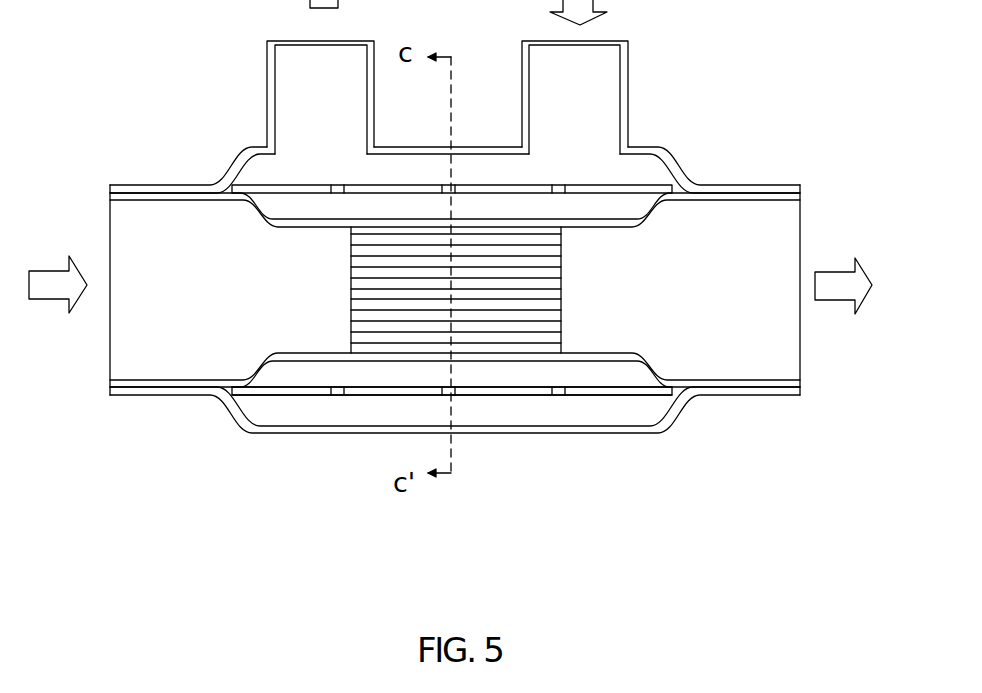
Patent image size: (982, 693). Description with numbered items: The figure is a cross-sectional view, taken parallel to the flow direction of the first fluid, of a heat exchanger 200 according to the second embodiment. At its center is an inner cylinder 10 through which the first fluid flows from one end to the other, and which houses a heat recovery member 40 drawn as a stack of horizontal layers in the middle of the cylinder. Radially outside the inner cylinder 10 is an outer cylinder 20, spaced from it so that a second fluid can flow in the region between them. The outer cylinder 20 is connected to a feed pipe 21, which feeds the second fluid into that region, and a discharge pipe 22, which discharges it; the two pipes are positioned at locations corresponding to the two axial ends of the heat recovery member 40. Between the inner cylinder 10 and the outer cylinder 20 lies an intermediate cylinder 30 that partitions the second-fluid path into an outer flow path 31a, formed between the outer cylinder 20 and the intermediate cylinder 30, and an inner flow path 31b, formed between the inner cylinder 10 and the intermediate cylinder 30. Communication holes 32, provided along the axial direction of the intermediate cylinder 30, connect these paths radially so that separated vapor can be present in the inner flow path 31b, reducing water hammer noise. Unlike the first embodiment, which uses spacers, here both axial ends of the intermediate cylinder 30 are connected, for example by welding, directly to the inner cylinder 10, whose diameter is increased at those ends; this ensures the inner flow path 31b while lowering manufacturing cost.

The heat exchanger 200 is at (497, 597).
The inner cylinder 10 is at (645, 370).
The outer cylinder 20 is at (237, 165).
The feed pipe 21 is at (627, 87).
The discharge pipe 22 is at (270, 95).
The intermediate cylinder 30 is at (452, 346).
The outer flow path 31a is at (307, 409).
The inner flow path 31b is at (378, 380).
The communication holes 32 is at (557, 393).
The heat recovery member 40 is at (543, 265).